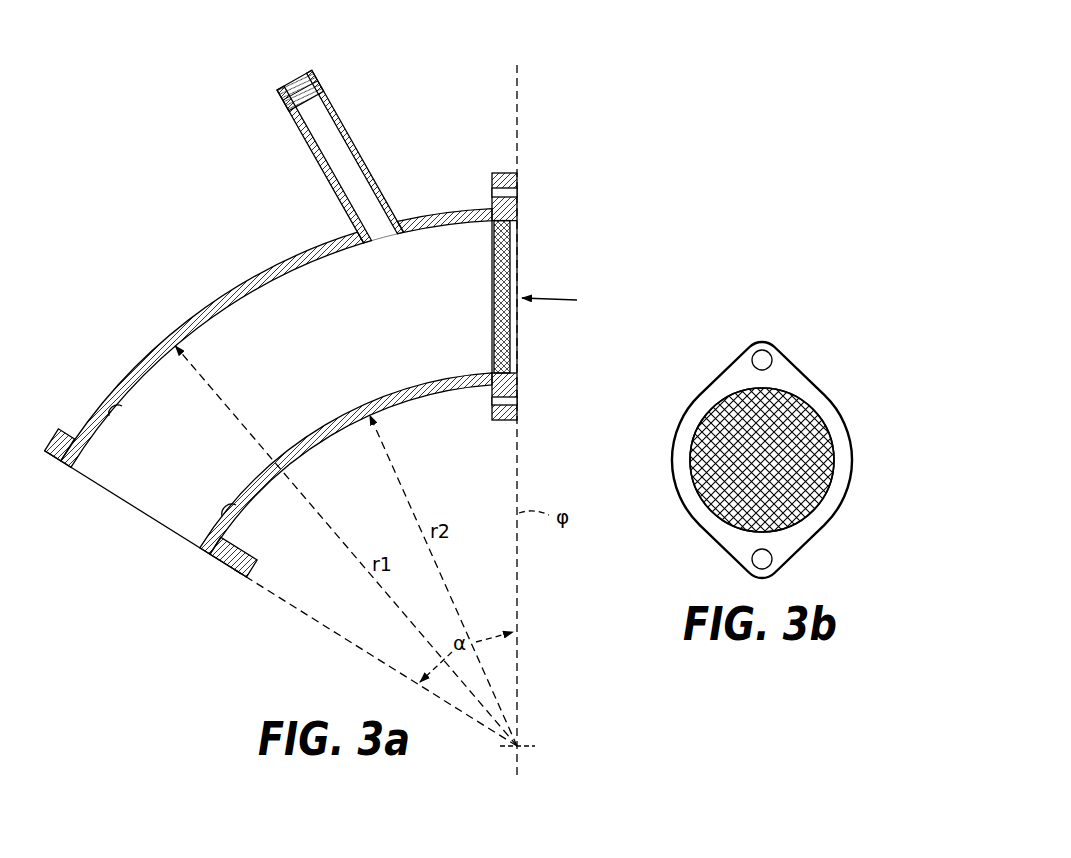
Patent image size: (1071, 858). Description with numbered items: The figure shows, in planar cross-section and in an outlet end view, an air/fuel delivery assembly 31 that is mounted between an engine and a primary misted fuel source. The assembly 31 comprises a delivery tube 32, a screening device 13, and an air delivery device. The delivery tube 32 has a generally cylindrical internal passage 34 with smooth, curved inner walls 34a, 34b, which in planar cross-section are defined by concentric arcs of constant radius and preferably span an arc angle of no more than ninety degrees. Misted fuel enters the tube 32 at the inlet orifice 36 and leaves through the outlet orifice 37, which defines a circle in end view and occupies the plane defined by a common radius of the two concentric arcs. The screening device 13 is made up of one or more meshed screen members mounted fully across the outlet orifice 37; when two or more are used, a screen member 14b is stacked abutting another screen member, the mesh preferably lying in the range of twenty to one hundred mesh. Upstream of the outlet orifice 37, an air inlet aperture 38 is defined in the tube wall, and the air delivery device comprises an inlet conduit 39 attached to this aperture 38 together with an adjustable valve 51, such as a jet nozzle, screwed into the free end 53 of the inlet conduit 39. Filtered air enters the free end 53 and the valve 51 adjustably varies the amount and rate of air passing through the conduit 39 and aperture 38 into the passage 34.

In FIG. 3a, the air/fuel delivery assembly 31 is at (240, 225).
In FIG. 3a, the delivery tube 32 is at (188, 325).
In FIG. 3a, the internal passage 34 is at (286, 320).
In FIG. 3a, the inner wall 34a is at (118, 416).
In FIG. 3a, the inner wall 34b is at (228, 502).
In FIG. 3a, the inlet orifice 36 is at (172, 498).
In FIG. 3a, the outlet orifice 37 is at (528, 240).
In FIG. 3b, the outlet orifice 37 is at (826, 500).
In FIG. 3a, the air inlet aperture 38 is at (392, 234).
In FIG. 3a, the inlet conduit 39 is at (363, 152).
In FIG. 3a, the adjustable valve 51 is at (316, 88).
In FIG. 3a, the free end 53 is at (308, 72).
In FIG. 3b, the screening device 13 is at (803, 430).
In FIG. 3b, the screen member 14b is at (834, 446).